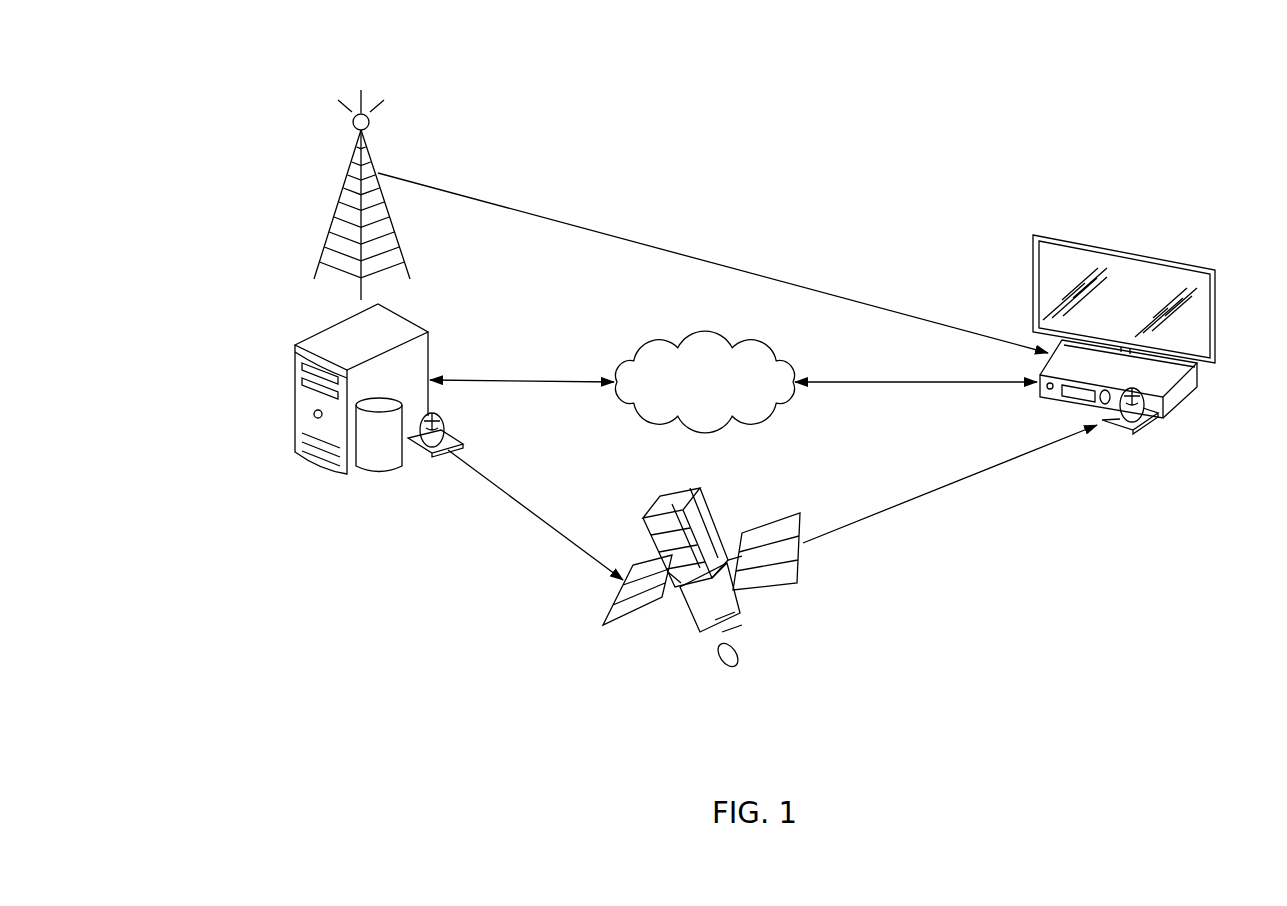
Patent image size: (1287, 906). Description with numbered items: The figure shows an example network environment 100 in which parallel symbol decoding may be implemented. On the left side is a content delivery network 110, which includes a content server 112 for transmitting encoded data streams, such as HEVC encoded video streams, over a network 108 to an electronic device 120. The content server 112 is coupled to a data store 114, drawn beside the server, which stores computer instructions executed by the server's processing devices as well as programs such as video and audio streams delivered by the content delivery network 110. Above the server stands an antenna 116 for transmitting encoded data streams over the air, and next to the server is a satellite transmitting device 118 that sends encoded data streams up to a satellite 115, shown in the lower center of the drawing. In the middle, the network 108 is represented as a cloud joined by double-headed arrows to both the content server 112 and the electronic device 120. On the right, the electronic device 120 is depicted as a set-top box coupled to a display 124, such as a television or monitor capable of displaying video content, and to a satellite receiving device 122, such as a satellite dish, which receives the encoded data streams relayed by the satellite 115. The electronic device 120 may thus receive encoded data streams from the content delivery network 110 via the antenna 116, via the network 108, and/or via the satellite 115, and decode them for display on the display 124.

The network environment 100 is at (1152, 86).
The content delivery network 110 is at (229, 501).
The content server 112 is at (296, 388).
The data store 114 is at (385, 463).
The satellite 115 is at (753, 607).
The antenna 116 is at (336, 212).
The satellite transmitting device 118 is at (446, 428).
The network 108 is at (733, 416).
The electronic device 120 is at (1178, 392).
The satellite receiving device 122 is at (1120, 432).
The display 124 is at (1145, 257).